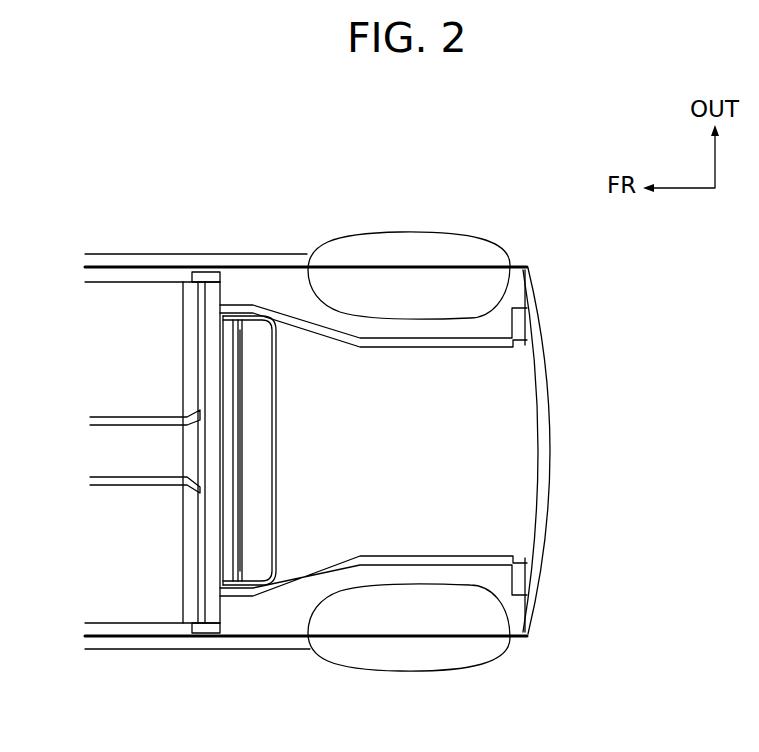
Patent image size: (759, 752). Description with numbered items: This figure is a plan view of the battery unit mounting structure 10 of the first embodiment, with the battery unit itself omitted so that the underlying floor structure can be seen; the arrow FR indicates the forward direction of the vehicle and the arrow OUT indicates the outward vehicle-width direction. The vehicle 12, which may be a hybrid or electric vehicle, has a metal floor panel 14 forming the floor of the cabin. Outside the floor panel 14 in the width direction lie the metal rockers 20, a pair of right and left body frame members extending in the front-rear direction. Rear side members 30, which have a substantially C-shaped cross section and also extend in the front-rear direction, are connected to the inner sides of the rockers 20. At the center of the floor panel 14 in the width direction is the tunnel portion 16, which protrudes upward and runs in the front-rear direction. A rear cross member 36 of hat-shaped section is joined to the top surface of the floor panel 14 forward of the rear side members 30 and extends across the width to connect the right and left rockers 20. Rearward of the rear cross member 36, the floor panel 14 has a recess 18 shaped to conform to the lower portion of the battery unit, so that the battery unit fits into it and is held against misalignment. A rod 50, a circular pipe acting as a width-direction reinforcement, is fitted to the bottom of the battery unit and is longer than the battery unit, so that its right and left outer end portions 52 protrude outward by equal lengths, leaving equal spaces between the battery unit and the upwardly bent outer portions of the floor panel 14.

The battery unit mounting structure 10 is at (290, 440).
The vehicle 12 is at (198, 238).
The floor panel 14 is at (500, 425).
The tunnel portion 16 is at (117, 435).
The recess 18 is at (257, 388).
The rockers 20 is at (125, 252).
The rear side members 30 is at (258, 285).
The rear cross member 36 is at (198, 545).
The rod 50 is at (247, 492).
The outer end portions 52 is at (235, 318).